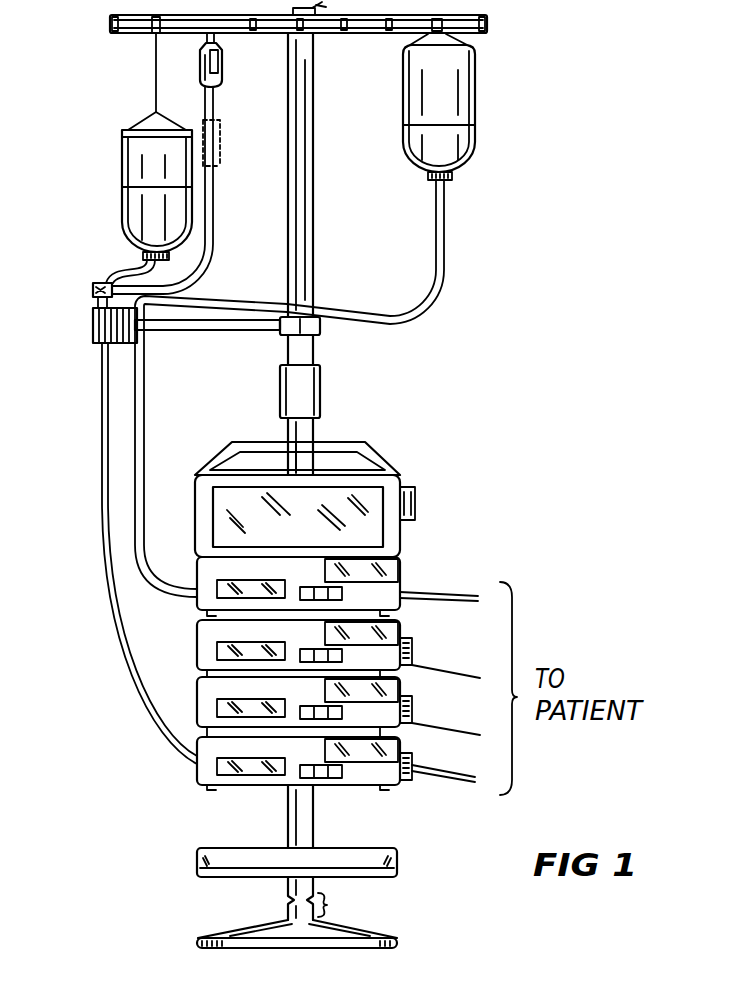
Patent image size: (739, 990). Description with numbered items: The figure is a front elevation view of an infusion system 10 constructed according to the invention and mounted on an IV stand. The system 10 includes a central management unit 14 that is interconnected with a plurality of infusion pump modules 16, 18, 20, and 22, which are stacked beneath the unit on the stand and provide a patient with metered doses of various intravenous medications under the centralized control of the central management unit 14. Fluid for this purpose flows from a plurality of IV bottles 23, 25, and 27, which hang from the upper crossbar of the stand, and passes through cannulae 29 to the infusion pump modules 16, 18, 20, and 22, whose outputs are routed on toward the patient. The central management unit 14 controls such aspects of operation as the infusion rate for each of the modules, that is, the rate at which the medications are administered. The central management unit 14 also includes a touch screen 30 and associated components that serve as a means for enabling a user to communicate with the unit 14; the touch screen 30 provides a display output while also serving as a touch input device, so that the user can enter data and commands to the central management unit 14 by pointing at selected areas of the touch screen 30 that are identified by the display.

The infusion system 10 is at (502, 381).
The central management unit 14 is at (228, 442).
The infusion pump module 16 is at (198, 597).
The infusion pump module 18 is at (198, 650).
The infusion pump module 20 is at (198, 696).
The infusion pump module 22 is at (196, 746).
The IV bottle 23 is at (122, 163).
The IV bottle 25 is at (218, 68).
The IV bottle 27 is at (476, 100).
The cannulae 29 is at (134, 411).
The touch screen 30 is at (363, 533).